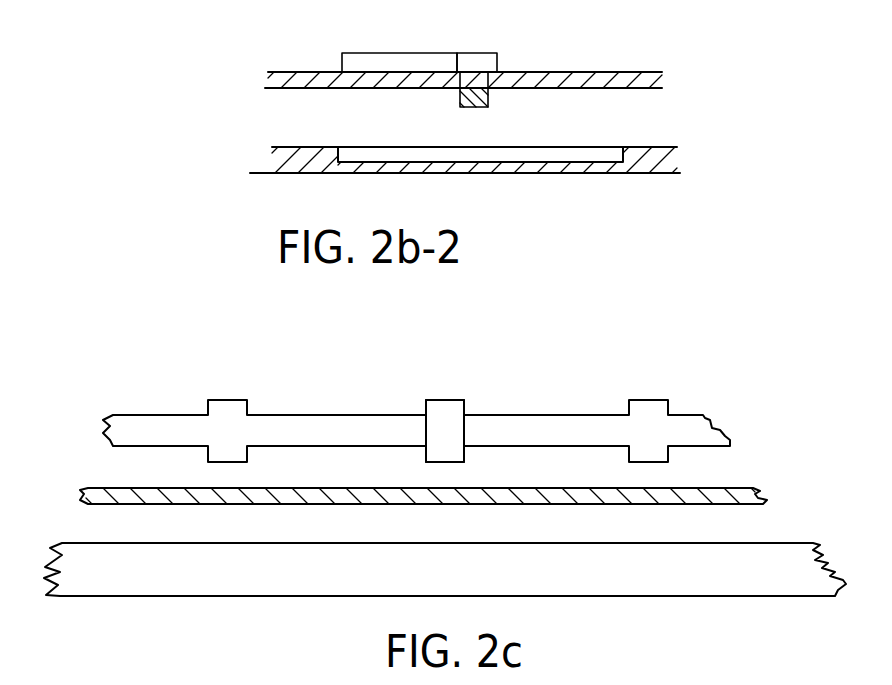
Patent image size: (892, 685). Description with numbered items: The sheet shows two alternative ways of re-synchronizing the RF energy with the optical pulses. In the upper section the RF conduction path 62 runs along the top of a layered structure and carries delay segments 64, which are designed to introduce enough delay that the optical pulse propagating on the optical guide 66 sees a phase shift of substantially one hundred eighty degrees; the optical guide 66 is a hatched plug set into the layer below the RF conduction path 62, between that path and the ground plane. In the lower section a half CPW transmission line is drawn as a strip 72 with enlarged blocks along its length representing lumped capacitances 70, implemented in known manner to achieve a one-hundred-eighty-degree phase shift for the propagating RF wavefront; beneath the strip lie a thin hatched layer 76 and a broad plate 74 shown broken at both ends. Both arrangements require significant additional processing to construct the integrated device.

In FIG. 2b-2, the RF conduction path 62 is at (488, 60).
In FIG. 2b-2, the delay segments 64 is at (432, 53).
In FIG. 2b-2, the optical guide 66 is at (488, 105).
In FIG. 2c, the lumped capacitances 70 is at (466, 407).
In FIG. 2c, the electrode strip 72 is at (315, 415).
In FIG. 2c, the substrate plate 74 is at (232, 597).
In FIG. 2c, the dielectric layer 76 is at (722, 488).